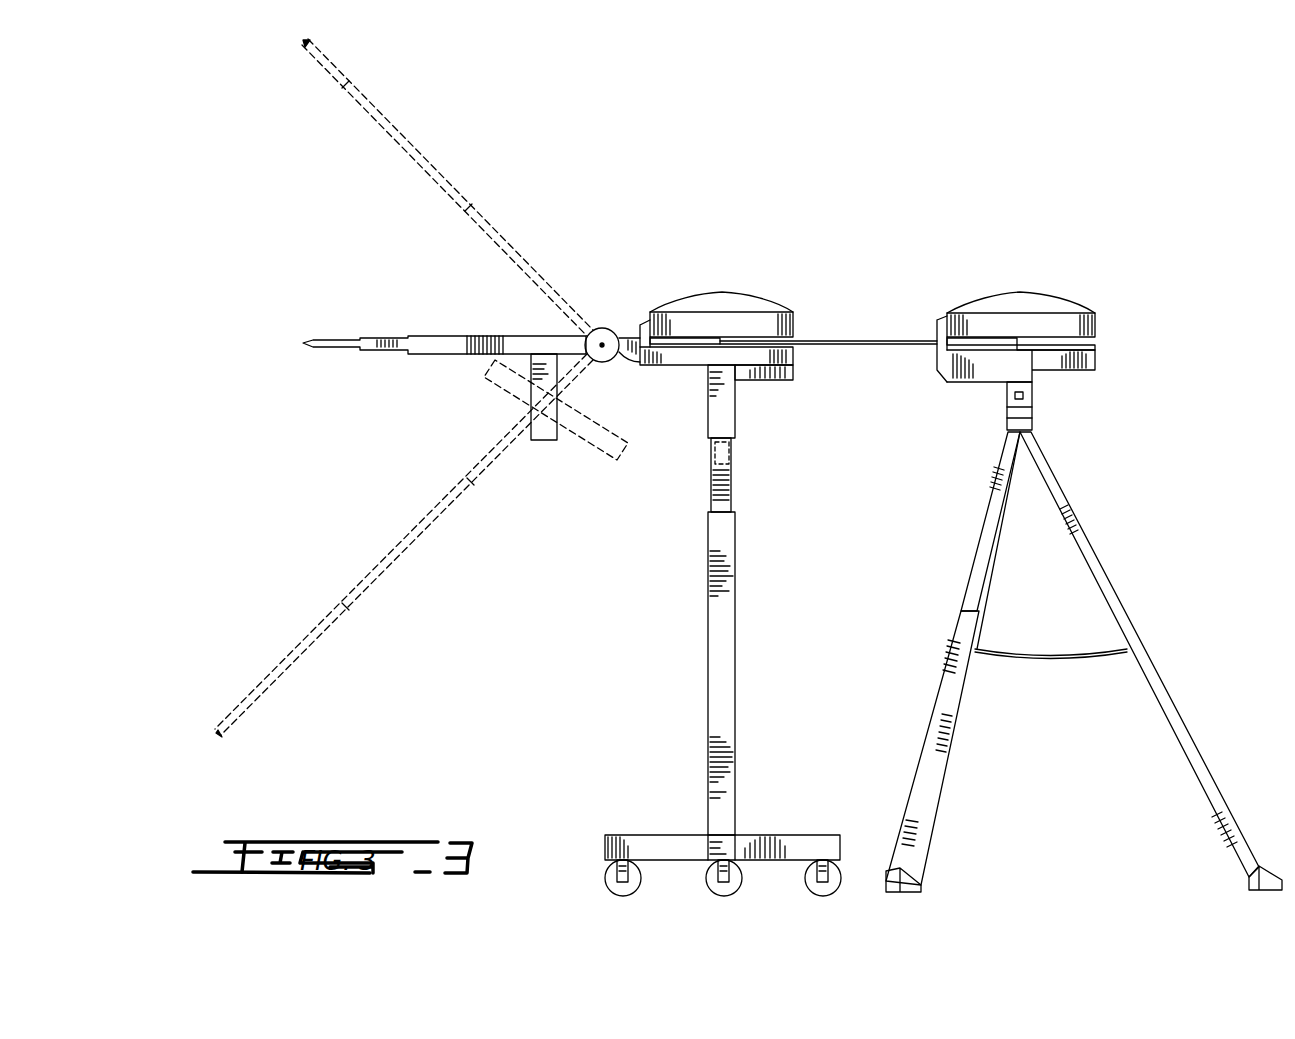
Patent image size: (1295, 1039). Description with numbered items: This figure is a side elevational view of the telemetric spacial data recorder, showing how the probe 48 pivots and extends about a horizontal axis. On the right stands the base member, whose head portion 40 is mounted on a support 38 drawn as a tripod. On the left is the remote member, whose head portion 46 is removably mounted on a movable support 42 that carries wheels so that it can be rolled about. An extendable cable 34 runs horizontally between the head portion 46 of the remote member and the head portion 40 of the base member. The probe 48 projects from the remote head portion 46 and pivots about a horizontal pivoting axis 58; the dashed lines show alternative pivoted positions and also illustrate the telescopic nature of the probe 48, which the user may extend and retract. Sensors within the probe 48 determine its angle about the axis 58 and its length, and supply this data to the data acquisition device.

The extendable cable 34 is at (873, 340).
The support 38 is at (1160, 679).
The head portion 40 is at (1070, 303).
The movable support 42 is at (737, 627).
The head portion 46 is at (767, 300).
The probe 48 is at (443, 344).
The horizontal pivoting axis 58 is at (603, 343).